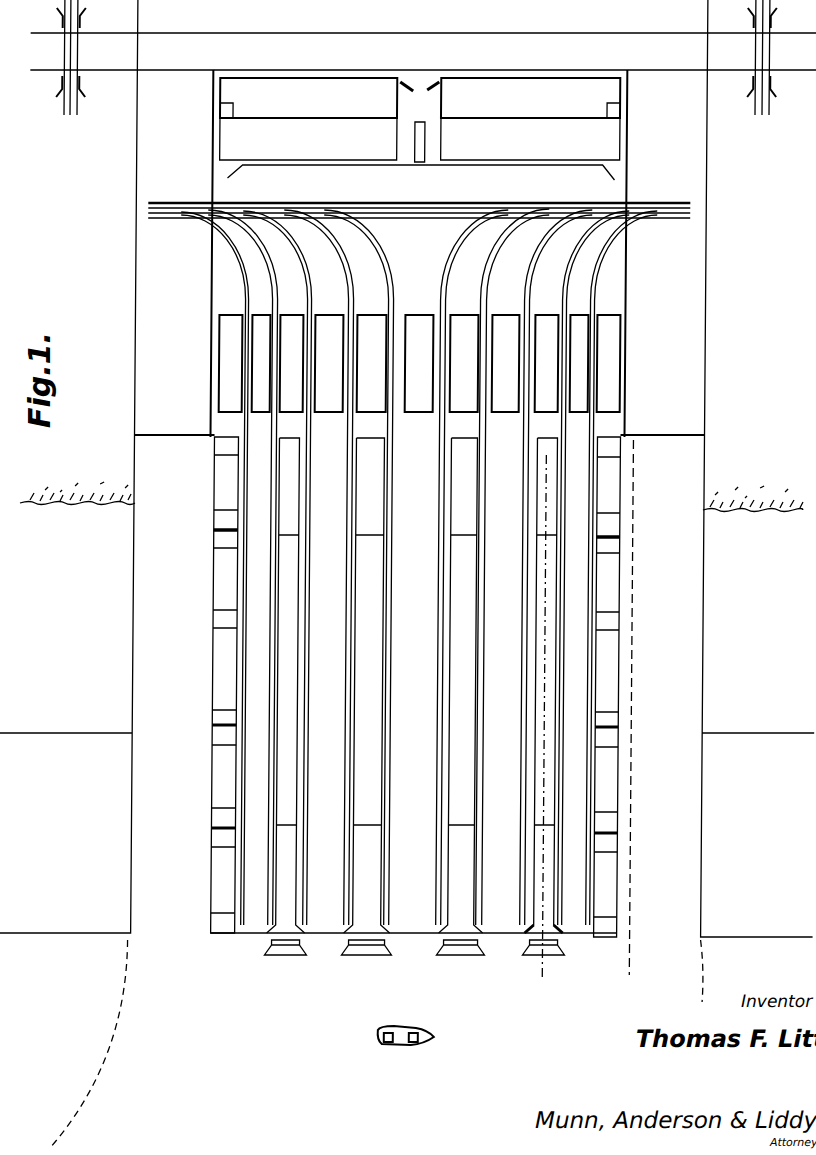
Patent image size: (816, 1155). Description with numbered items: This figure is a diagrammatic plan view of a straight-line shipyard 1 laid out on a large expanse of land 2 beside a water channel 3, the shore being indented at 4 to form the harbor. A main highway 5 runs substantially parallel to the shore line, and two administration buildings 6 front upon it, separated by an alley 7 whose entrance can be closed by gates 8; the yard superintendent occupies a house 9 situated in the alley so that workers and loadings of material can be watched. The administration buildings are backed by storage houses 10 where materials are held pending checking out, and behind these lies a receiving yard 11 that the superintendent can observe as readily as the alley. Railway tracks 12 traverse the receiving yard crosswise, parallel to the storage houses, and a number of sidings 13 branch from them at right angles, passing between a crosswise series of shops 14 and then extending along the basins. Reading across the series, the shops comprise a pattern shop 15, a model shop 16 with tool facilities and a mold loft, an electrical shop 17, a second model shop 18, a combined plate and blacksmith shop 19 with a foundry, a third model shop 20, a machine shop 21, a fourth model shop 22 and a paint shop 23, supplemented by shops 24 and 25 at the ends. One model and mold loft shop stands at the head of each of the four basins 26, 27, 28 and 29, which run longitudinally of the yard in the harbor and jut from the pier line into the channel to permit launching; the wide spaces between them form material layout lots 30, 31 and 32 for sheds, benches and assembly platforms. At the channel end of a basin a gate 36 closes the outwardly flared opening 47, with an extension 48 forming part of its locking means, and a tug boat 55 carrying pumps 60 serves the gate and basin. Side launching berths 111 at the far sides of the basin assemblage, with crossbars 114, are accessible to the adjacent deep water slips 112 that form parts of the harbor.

The shipyard 1 is at (126, 366).
The expanse of land 2 is at (545, 455).
The water channel 3 is at (421, 1107).
The harbor 4 is at (629, 430).
The main highway 5 is at (383, 45).
The administration buildings 6 is at (306, 95).
The alley 7 is at (403, 85).
The gates 8 is at (427, 85).
The house 9 is at (418, 153).
The storage houses 10 is at (262, 146).
The receiving yard 11 is at (382, 208).
The railway tracks 12 is at (665, 212).
The sidings 13 is at (349, 298).
The shops 14 is at (328, 306).
The pattern shop 15 is at (578, 412).
The model shop 16 is at (546, 412).
The electrical shop 17 is at (500, 412).
The second model shop 18 is at (463, 412).
The combined plate and blacksmith shop 19 is at (418, 412).
The third model shop 20 is at (373, 412).
The machine shop 21 is at (324, 412).
The fourth model shop 22 is at (292, 412).
The paint shop 23 is at (262, 412).
The supplementary shop 24 is at (609, 412).
The supplementary shop 25 is at (231, 412).
The basin 26 is at (530, 585).
The basin 27 is at (445, 582).
The basin 28 is at (354, 580).
The basin 29 is at (277, 578).
The material layout lot 30 is at (469, 887).
The material layout lot 31 is at (379, 813).
The material layout lot 32 is at (294, 887).
The gate 36 is at (530, 958).
The opening 47 is at (524, 930).
The extension 48 is at (542, 958).
The vessel 55 is at (401, 1046).
The pumps 60 is at (388, 1046).
The side launching berths 111 is at (222, 598).
The deep water slips 112 is at (154, 561).
The pier crossbar 114 is at (224, 536).